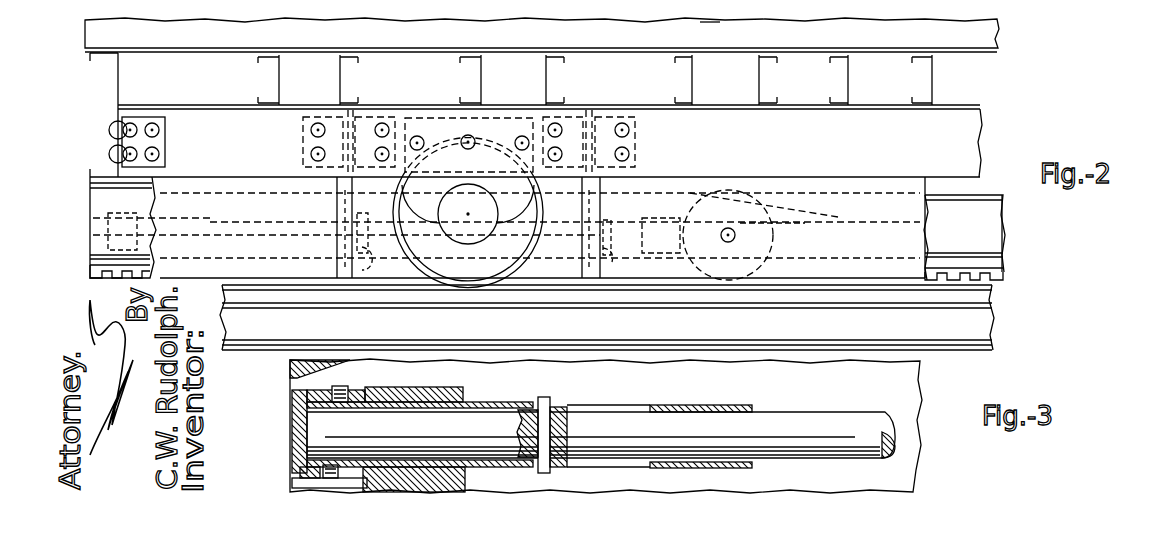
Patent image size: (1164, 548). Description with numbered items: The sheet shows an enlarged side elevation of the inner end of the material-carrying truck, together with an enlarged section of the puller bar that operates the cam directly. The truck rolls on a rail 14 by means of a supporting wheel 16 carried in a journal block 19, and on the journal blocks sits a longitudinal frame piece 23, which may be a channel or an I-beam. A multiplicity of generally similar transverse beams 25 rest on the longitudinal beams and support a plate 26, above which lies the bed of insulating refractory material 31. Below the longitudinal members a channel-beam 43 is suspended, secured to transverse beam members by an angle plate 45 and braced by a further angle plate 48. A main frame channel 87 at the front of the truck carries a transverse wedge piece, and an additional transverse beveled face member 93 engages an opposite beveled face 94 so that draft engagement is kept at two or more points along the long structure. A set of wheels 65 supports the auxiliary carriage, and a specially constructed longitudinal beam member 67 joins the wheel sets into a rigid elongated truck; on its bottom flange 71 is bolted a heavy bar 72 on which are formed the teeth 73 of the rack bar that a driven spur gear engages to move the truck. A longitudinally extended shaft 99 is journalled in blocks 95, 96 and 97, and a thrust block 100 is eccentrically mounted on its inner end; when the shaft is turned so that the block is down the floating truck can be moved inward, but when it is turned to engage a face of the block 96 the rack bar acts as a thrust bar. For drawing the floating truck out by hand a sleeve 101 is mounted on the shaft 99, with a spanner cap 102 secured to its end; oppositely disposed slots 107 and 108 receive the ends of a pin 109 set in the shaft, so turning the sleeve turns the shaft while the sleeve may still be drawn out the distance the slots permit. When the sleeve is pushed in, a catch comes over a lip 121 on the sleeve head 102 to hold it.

In FIG. 2, the rail 14 is at (938, 322).
In FIG. 2, the supporting wheel 16 is at (523, 268).
In FIG. 2, the journal block 19 is at (467, 196).
In FIG. 2, the longitudinal frame piece 23 is at (948, 125).
In FIG. 2, the transverse beam 25 is at (338, 74).
In FIG. 2, the plate 26 is at (803, 48).
In FIG. 2, the insulating refractory material 31 is at (707, 22).
In FIG. 2, the channel-beam 43 is at (920, 228).
In FIG. 2, the angle plate 45 is at (167, 143).
In FIG. 2, the angle plate 48 is at (336, 205).
In FIG. 2, the set of wheels 65 is at (805, 242).
In FIG. 2, the longitudinal beam member 67 is at (1005, 226).
In FIG. 2, the bottom flange 71 is at (977, 252).
In FIG. 2, the heavy bar 72 is at (997, 268).
In FIG. 2, the teeth 73 is at (997, 282).
In FIG. 2, the main frame channel 87 is at (122, 84).
In FIG. 2, the transverse beveled face member 93 is at (102, 208).
In FIG. 3, the transverse beveled face member 93 is at (292, 370).
In FIG. 2, the beveled face 94 is at (852, 217).
In FIG. 2, the block 95 is at (366, 250).
In FIG. 2, the block 96 is at (605, 248).
In FIG. 2, the block 97 is at (78, 285).
In FIG. 3, the block 97 is at (431, 388).
In FIG. 2, the shaft 99 is at (257, 218).
In FIG. 3, the shaft 99 is at (827, 423).
In FIG. 2, the thrust block 100 is at (660, 254).
In FIG. 2, the sleeve 101 is at (182, 216).
In FIG. 3, the sleeve 101 is at (490, 402).
In FIG. 2, the spanner cap 102 is at (93, 246).
In FIG. 3, the spanner cap 102 is at (298, 412).
In FIG. 3, the slot 107 is at (592, 405).
In FIG. 3, the slot 108 is at (617, 463).
In FIG. 3, the pin 109 is at (545, 397).
In FIG. 3, the lip 121 is at (293, 484).